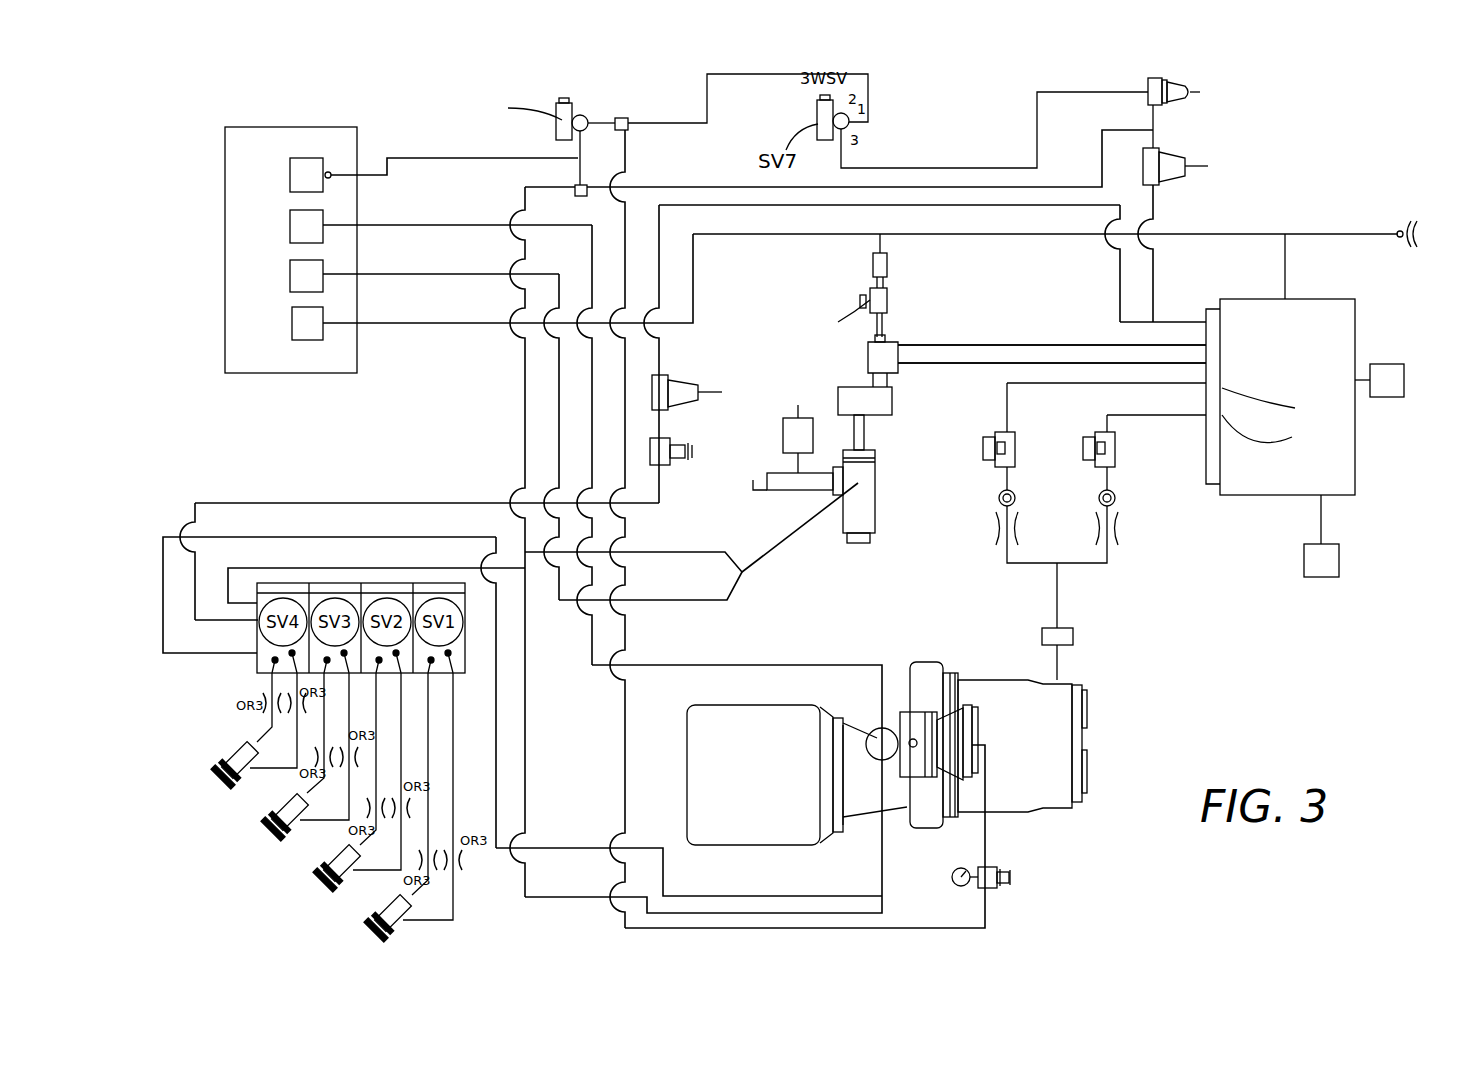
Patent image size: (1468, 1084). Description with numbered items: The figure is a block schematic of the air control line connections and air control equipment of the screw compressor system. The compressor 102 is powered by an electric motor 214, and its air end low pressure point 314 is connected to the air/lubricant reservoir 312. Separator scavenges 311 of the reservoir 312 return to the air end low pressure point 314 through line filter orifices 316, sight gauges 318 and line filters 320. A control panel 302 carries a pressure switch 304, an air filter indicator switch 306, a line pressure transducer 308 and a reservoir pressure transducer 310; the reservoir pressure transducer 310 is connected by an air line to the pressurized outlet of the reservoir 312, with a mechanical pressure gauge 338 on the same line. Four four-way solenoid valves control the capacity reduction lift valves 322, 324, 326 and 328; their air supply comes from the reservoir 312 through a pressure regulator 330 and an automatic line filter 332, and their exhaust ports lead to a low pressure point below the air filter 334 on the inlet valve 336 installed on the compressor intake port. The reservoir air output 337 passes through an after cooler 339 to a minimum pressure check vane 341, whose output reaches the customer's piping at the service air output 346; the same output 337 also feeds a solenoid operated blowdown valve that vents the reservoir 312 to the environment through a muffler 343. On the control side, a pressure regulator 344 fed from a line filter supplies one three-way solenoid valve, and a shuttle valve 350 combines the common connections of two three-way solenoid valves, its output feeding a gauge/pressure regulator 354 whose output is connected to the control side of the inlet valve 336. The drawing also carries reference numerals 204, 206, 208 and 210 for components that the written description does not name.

The control panel 302 is at (240, 152).
The pressure switch 304 is at (302, 186).
The air filter indicator switch 306 is at (302, 235).
The line pressure transducer 308 is at (302, 282).
The reservoir pressure transducer 310 is at (303, 335).
The accumulator 204 is at (790, 435).
The sensor 206 is at (1380, 388).
The sensor 208 is at (1318, 568).
The orifice 210 is at (1070, 633).
The electric motor 214 is at (737, 727).
The compressor 102 is at (1032, 773).
The separator scavenges 311 is at (1280, 415).
The air/lubricant reservoir 312 is at (1264, 483).
The air end low pressure point 314 is at (1060, 682).
The line filter orifices 316 is at (1100, 543).
The sight gauges 318 is at (999, 496).
The line filters 320 is at (1095, 433).
The lift valve 322 is at (383, 927).
The lift valve 324 is at (322, 873).
The lift valve 326 is at (273, 827).
The lift valve 328 is at (225, 775).
The pressure regulator 330 is at (650, 450).
The automatic line filter 332 is at (690, 383).
The air filter 334 is at (877, 740).
The inlet valve 336 is at (932, 700).
The reservoir air output 337 is at (1078, 350).
The mechanical pressure gauge 338 is at (1417, 218).
The after cooler 339 is at (850, 390).
The minimum pressure check vane 341 is at (863, 522).
The muffler 343 is at (881, 234).
The pressure regulator 344 is at (1195, 100).
The service air output 346 is at (767, 480).
The shuttle valve 350 is at (630, 128).
The gauge/pressure regulator 354 is at (995, 885).